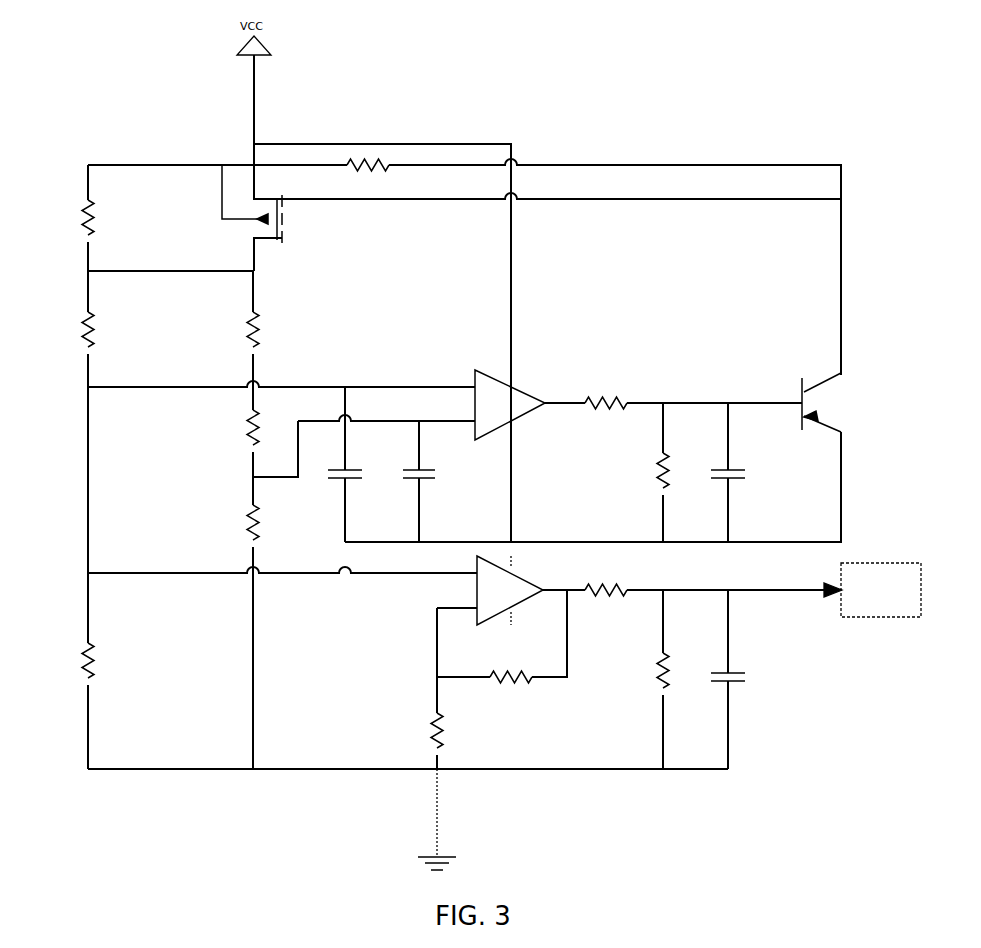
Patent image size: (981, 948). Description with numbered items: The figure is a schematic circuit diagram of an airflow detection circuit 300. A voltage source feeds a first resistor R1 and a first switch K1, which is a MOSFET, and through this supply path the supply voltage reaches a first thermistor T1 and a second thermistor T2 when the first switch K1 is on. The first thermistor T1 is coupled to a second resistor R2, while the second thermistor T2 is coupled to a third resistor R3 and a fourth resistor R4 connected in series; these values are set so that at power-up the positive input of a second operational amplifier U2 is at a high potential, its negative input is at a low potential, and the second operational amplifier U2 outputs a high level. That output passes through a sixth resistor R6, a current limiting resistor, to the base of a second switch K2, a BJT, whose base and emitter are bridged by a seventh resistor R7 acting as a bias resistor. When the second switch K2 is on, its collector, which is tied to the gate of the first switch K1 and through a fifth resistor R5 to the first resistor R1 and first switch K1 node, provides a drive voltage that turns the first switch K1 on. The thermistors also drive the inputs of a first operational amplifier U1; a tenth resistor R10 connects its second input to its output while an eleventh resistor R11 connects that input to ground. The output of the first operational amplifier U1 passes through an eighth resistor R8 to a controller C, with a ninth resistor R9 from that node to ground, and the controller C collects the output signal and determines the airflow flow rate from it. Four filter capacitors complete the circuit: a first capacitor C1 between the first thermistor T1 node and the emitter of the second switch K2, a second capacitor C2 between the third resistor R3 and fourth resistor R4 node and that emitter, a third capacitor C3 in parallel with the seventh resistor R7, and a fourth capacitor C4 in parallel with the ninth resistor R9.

The airflow detection circuit 300 is at (63, 37).
The first resistor R1 is at (98, 217).
The second resistor R2 is at (98, 660).
The third resistor R3 is at (265, 427).
The fourth resistor R4 is at (265, 522).
The fifth resistor R5 is at (368, 178).
The sixth resistor R6 is at (606, 414).
The seventh resistor R7 is at (675, 472).
The eighth resistor R8 is at (606, 601).
The ninth resistor R9 is at (675, 679).
The tenth resistor R10 is at (511, 689).
The eleventh resistor R11 is at (452, 730).
The first thermistor T1 is at (102, 329).
The second thermistor T2 is at (267, 329).
The first switch K1 is at (269, 218).
The second switch K2 is at (811, 409).
The first operational amplifier U1 is at (510, 590).
The second operational amplifier U2 is at (510, 405).
The first capacitor C1 is at (357, 464).
The second capacitor C2 is at (430, 481).
The third capacitor C3 is at (739, 472).
The fourth capacitor C4 is at (739, 679).
The controller C is at (865, 563).